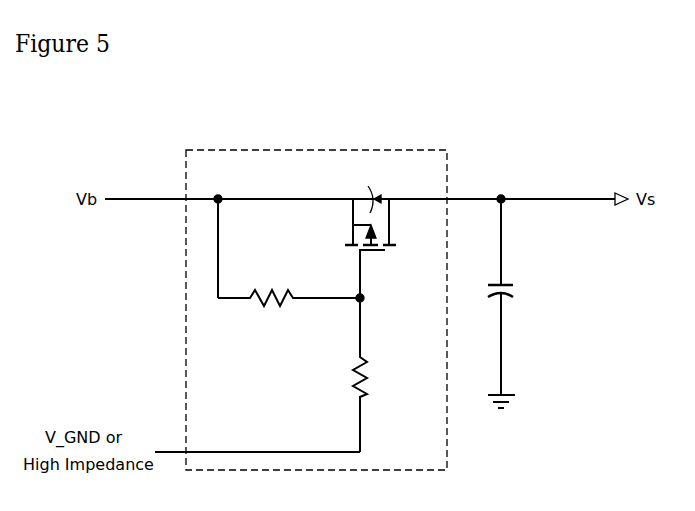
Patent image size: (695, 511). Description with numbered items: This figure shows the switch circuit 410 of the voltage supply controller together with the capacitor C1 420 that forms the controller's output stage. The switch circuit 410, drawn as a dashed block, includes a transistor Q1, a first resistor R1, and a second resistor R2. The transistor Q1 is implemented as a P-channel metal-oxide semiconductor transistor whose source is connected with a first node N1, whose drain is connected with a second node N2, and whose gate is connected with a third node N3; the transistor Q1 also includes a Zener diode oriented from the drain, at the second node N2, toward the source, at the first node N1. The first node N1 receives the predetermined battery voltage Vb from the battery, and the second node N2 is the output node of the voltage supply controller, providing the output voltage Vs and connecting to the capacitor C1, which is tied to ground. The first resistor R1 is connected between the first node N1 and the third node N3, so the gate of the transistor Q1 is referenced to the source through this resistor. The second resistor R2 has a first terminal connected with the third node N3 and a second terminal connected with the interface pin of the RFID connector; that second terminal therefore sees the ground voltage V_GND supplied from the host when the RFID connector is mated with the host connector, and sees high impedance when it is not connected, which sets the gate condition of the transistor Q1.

The switch circuit 410 is at (352, 149).
The capacitor C1 420 is at (504, 303).
The transistor Q1 is at (350, 242).
The first resistor R1 is at (289, 287).
The second resistor R2 is at (373, 375).
The capacitor C1 is at (520, 270).
The first node N1 is at (220, 194).
The second node N2 is at (503, 194).
The third node N3 is at (365, 298).